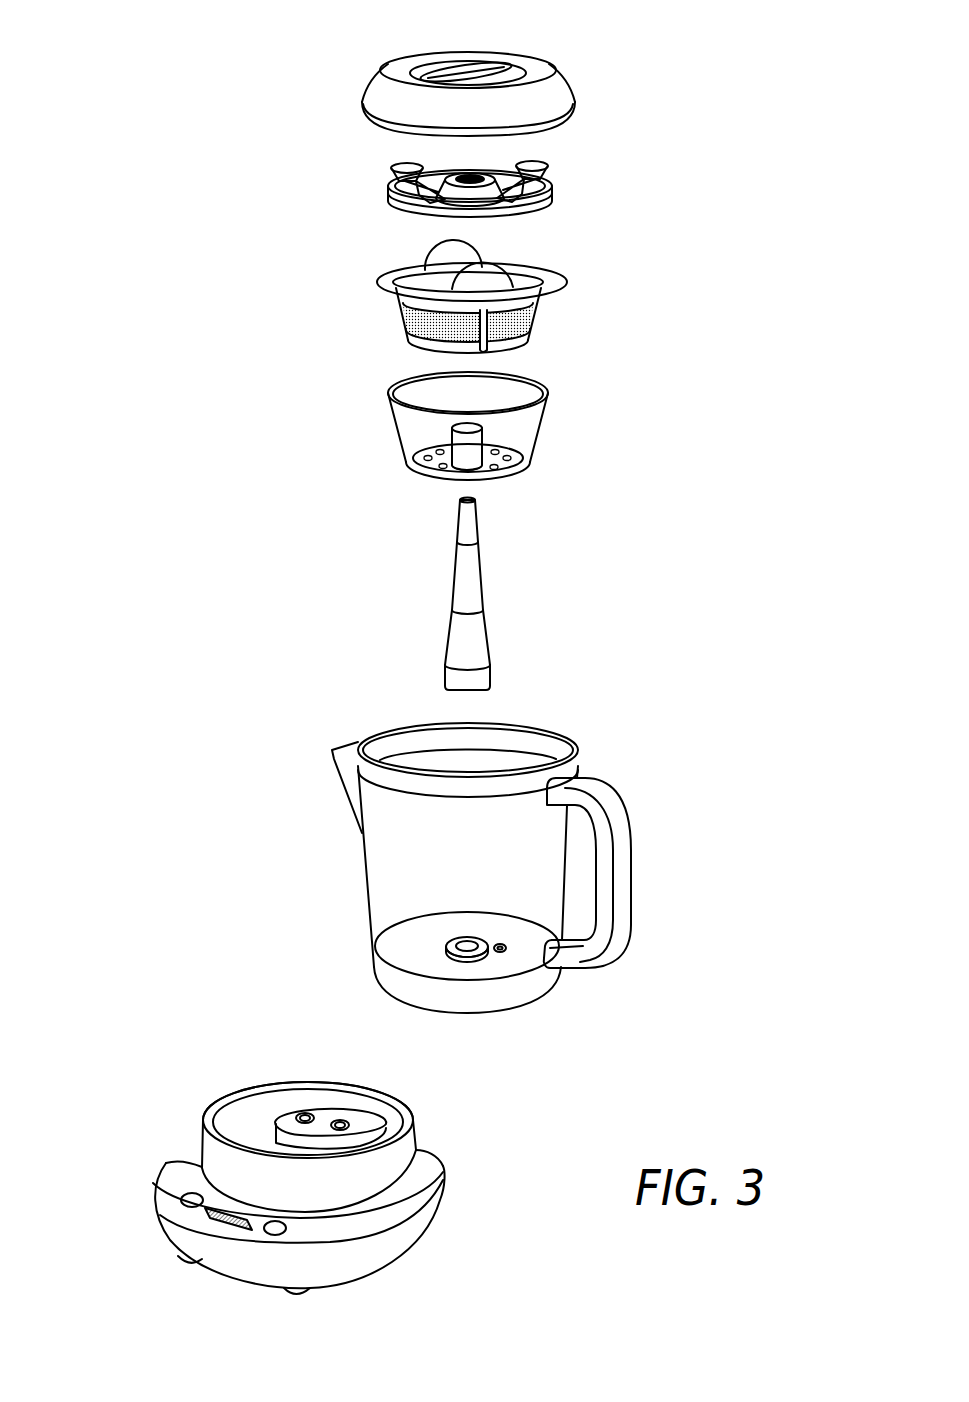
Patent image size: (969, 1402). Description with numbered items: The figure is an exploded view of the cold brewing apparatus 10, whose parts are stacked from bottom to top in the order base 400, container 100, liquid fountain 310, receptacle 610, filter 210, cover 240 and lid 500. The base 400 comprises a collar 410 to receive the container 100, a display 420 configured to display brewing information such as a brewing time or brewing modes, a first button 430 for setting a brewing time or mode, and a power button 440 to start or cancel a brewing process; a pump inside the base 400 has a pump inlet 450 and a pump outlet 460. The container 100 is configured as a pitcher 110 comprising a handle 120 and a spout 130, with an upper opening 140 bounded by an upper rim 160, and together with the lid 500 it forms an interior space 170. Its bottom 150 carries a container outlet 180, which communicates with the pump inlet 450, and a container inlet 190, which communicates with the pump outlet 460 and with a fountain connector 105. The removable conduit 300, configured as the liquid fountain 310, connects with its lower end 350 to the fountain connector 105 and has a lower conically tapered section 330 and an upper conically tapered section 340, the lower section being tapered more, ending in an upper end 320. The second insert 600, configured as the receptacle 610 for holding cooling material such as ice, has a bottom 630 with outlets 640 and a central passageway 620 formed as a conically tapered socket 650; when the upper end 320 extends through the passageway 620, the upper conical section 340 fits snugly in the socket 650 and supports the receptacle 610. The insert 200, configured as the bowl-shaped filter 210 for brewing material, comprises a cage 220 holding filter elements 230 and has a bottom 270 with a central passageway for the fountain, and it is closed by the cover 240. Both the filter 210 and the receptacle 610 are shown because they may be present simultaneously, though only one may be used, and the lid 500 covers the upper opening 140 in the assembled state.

The cold brewing apparatus 10 is at (116, 57).
The lid 500 is at (368, 120).
The cover 240 is at (390, 206).
The insert 200 is at (402, 320).
The filter 210 is at (393, 297).
The filter elements 230 is at (413, 334).
The cage 220 is at (534, 324).
The bottom of filter 270 is at (518, 346).
The second insert 600 is at (406, 446).
The receptacle 610 is at (394, 422).
The socket 650 is at (490, 437).
The outlets 640 is at (492, 453).
The bottom of receptacle 630 is at (506, 478).
The passageway 620 is at (462, 465).
The removable conduit 300 is at (448, 652).
The liquid fountain 310 is at (444, 620).
The upper end 320 is at (478, 534).
The upper conical section 340 is at (456, 556).
The lower conical section 330 is at (488, 634).
The lower end 350 is at (492, 675).
The container 100 is at (360, 828).
The upper opening 140 is at (516, 746).
The upper rim 160 is at (570, 735).
The spout 130 is at (347, 748).
The handle 120 is at (626, 795).
The pitcher 110 is at (366, 855).
The interior space 170 is at (532, 852).
The fountain connector 105 is at (447, 940).
The bottom of container 150 is at (410, 955).
The container inlet 190 is at (460, 957).
The container outlet 180 is at (502, 957).
The base 400 is at (198, 1143).
The collar 410 is at (372, 1170).
The pump outlet 460 is at (305, 1116).
The pump inlet 450 is at (345, 1125).
The first button 430 is at (183, 1197).
The display 420 is at (217, 1226).
The power button 440 is at (290, 1228).